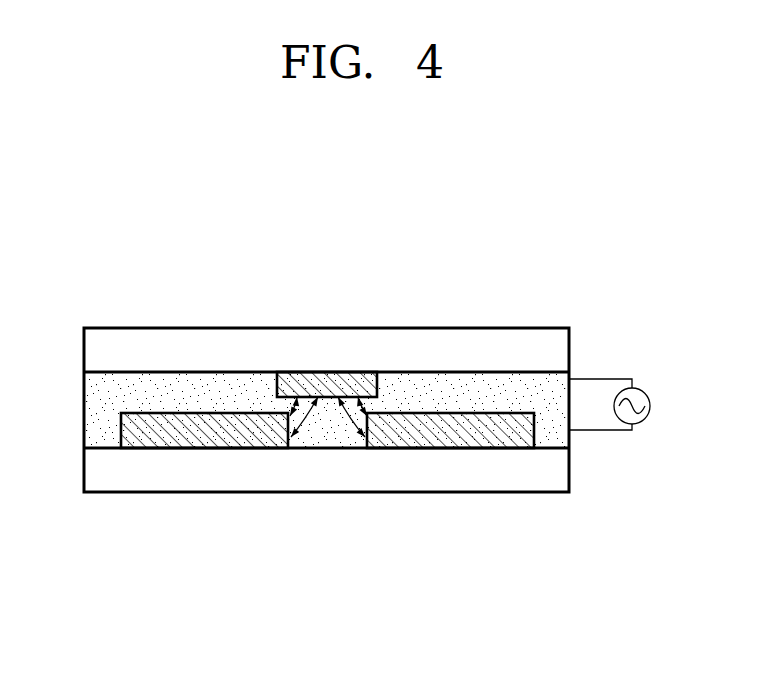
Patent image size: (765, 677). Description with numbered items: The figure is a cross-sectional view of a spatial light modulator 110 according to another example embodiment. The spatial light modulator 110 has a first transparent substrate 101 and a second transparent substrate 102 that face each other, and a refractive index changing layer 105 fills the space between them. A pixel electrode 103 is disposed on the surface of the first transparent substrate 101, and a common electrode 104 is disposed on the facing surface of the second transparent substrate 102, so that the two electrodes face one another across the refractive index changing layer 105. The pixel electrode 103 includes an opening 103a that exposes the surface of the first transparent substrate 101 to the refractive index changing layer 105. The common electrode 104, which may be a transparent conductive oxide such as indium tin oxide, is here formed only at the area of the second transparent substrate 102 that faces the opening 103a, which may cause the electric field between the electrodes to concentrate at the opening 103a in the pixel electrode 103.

The first transparent substrate 101 is at (397, 477).
The second transparent substrate 102 is at (115, 343).
The pixel electrode 103 is at (163, 437).
The opening 103a is at (336, 455).
The common electrode 104 is at (330, 383).
The refractive index changing layer 105 is at (193, 385).
The spatial light modulator 110 is at (272, 520).